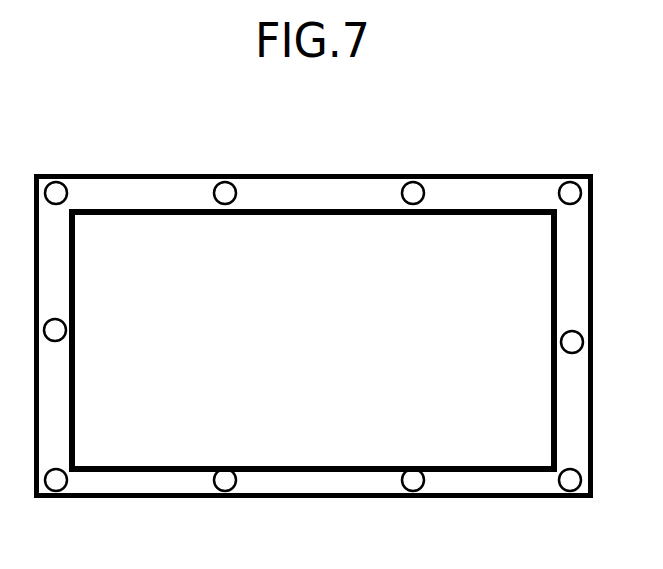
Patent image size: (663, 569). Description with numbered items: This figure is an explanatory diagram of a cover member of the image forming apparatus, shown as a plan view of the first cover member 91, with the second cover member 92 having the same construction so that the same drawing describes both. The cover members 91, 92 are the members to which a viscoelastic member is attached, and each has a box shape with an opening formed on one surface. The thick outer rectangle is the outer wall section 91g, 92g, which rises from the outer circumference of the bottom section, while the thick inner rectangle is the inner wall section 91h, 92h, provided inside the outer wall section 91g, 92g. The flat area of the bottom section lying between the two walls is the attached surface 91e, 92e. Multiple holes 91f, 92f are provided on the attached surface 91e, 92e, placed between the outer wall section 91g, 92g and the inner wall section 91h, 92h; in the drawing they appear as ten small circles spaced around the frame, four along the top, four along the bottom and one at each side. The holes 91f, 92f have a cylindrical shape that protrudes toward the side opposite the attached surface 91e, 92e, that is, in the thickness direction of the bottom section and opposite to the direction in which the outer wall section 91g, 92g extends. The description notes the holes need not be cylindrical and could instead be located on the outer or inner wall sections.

The first cover member 91 is at (313, 345).
The second cover member 92 is at (313, 345).
The attached surface 91e is at (314, 336).
The attached surface 92e is at (122, 193).
The holes 91f is at (313, 317).
The holes 92f is at (228, 192).
The outer wall section 91g is at (313, 522).
The outer wall section 92g is at (115, 498).
The inner wall section 91h is at (313, 340).
The inner wall section 92h is at (482, 463).